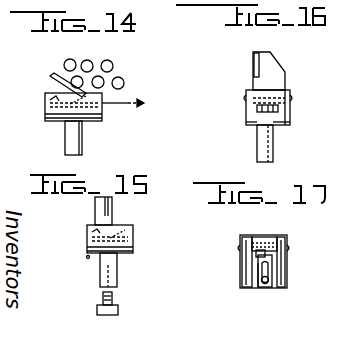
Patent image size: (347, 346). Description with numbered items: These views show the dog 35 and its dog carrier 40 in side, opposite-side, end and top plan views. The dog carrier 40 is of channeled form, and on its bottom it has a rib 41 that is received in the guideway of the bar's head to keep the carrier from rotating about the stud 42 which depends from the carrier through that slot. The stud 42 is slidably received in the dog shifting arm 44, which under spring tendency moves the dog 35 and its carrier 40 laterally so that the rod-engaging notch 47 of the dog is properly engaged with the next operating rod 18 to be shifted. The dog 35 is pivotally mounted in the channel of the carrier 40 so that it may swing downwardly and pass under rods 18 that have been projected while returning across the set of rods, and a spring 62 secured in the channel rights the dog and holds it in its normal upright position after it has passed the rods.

In FIG. 14, the operating rod 18 is at (94, 86).
In FIG. 16, the dog 35 is at (272, 78).
In FIG. 15, the dog 35 is at (95, 210).
In FIG. 17, the dog 35 is at (262, 240).
In FIG. 16, the dog carrier 40 is at (282, 119).
In FIG. 17, the dog carrier 40 is at (287, 280).
In FIG. 16, the rib 41 is at (255, 131).
In FIG. 15, the rib 41 is at (88, 258).
In FIG. 14, the stud 42 is at (72, 145).
In FIG. 16, the stud 42 is at (261, 146).
In FIG. 15, the stud 42 is at (100, 270).
In FIG. 17, the stud 42 is at (242, 278).
In FIG. 14, the dog shifting arm 44 is at (87, 128).
In FIG. 14, the rod-engaging notch 47 is at (52, 78).
In FIG. 16, the rod-engaging notch 47 is at (256, 60).
In FIG. 15, the rod-engaging notch 47 is at (108, 218).
In FIG. 17, the rod-engaging notch 47 is at (253, 257).
In FIG. 14, the spring 62 is at (45, 99).
In FIG. 16, the spring 62 is at (260, 113).
In FIG. 15, the spring 62 is at (135, 230).
In FIG. 17, the spring 62 is at (259, 286).